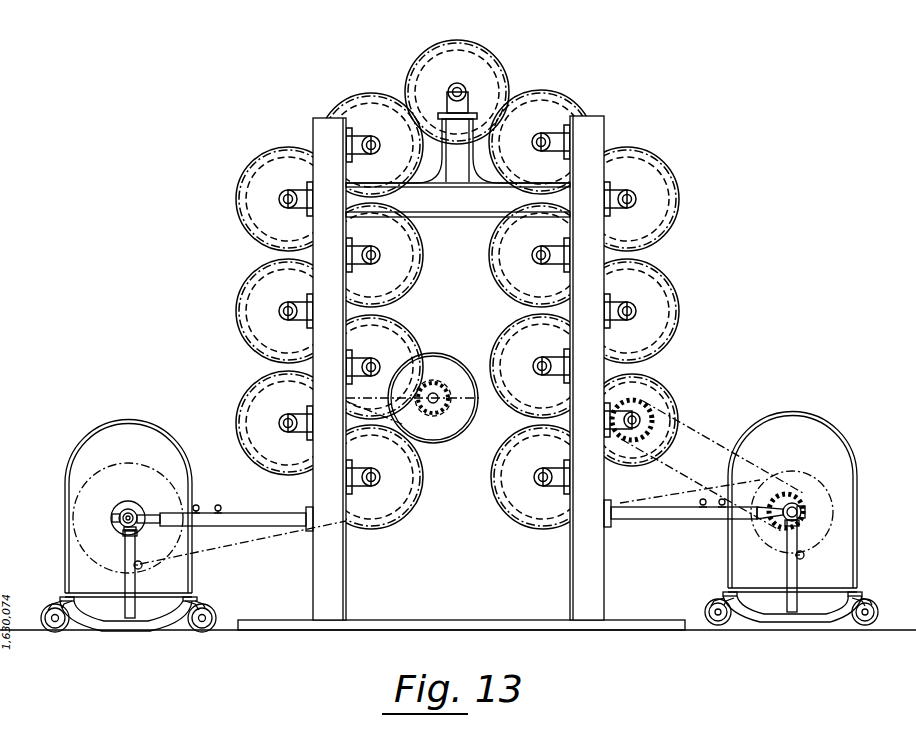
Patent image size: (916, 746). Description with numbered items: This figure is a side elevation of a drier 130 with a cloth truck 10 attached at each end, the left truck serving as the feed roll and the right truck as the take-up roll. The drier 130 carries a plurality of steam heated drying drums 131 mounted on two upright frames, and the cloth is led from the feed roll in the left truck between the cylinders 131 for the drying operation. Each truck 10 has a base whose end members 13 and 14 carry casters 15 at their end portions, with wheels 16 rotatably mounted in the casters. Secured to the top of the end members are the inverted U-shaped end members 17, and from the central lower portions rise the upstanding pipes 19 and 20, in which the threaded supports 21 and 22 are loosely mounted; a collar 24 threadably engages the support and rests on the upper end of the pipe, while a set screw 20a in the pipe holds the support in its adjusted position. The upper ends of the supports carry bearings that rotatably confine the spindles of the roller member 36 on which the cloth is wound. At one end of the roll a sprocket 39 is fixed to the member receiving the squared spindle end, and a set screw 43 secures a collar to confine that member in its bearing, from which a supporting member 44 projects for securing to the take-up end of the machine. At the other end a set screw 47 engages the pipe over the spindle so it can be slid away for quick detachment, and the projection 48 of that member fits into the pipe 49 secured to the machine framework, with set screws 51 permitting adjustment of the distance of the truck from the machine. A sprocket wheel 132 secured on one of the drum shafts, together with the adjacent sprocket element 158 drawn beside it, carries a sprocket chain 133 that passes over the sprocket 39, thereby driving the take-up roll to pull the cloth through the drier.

The truck 10 is at (460, 512).
The end member 13 is at (801, 601).
The end member 14 is at (101, 611).
The caster 15 is at (55, 603).
The wheel 16 is at (41, 611).
The inverted U-shaped end member 17 is at (190, 472).
The upstanding pipe 19 is at (786, 570).
The upstanding pipe 20 is at (126, 588).
The set screw 20a is at (139, 569).
The threaded support 21 is at (826, 514).
The threaded support 22 is at (112, 519).
The collar 24 is at (126, 536).
The roller member 36 is at (130, 508).
The sprocket 39 is at (801, 500).
The set screw 43 is at (771, 505).
The supporting member 44 is at (775, 521).
The set screw 47 is at (116, 514).
The projection 48 is at (150, 516).
The pipe 49 is at (265, 513).
The set screw 51 is at (200, 505).
The drier 130 is at (333, 600).
The drying drum 131 is at (470, 62).
The sprocket wheel 132 is at (633, 402).
The sprocket chain 133 is at (700, 428).
The sprocket 158 is at (653, 410).